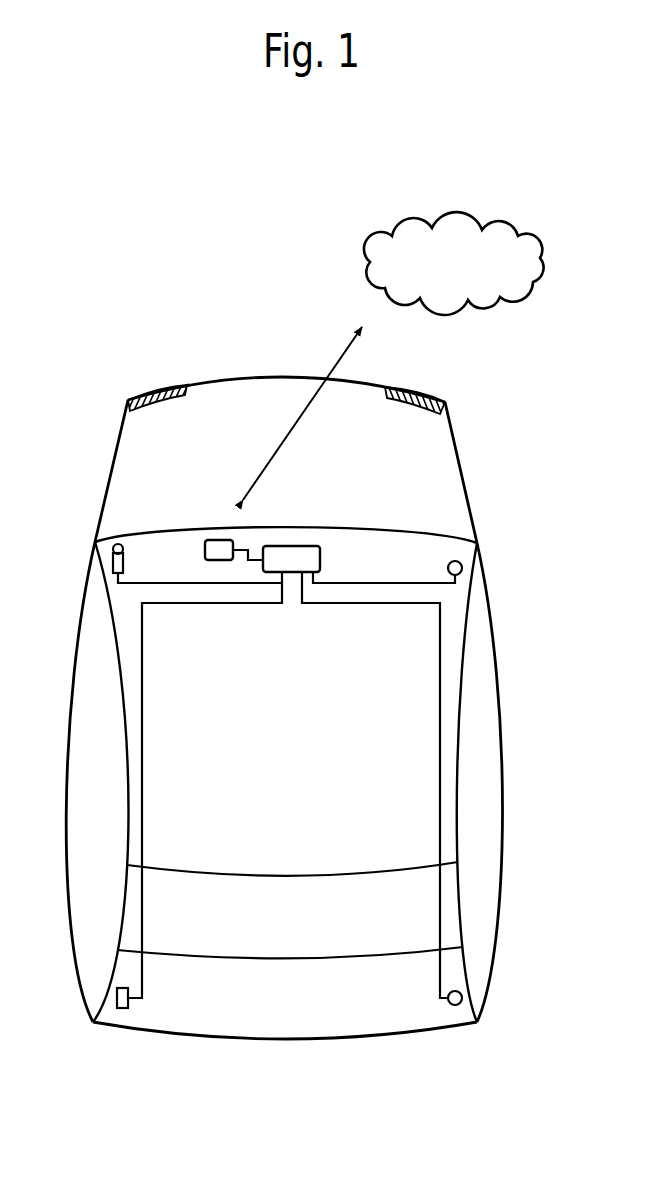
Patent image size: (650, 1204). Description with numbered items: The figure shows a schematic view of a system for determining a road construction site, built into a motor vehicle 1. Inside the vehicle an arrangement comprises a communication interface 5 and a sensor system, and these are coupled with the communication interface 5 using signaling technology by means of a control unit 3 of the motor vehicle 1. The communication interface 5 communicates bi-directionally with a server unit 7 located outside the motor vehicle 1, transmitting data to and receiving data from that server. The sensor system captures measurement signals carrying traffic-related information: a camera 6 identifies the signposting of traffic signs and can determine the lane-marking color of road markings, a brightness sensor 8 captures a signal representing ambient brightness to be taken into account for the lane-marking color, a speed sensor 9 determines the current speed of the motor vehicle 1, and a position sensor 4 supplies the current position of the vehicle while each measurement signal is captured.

The motor vehicle 1 is at (118, 321).
The control unit 3 is at (300, 556).
The position sensor 4 is at (117, 1000).
The communication interface 5 is at (218, 540).
The camera 6 is at (113, 561).
The server unit 7 is at (458, 232).
The brightness sensor 8 is at (462, 570).
The speed sensor 9 is at (462, 998).